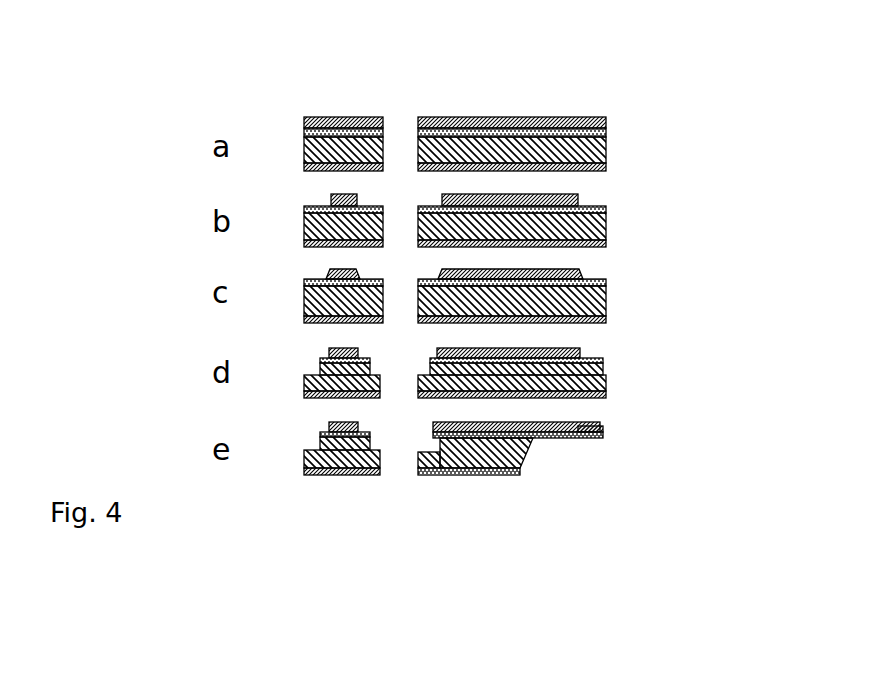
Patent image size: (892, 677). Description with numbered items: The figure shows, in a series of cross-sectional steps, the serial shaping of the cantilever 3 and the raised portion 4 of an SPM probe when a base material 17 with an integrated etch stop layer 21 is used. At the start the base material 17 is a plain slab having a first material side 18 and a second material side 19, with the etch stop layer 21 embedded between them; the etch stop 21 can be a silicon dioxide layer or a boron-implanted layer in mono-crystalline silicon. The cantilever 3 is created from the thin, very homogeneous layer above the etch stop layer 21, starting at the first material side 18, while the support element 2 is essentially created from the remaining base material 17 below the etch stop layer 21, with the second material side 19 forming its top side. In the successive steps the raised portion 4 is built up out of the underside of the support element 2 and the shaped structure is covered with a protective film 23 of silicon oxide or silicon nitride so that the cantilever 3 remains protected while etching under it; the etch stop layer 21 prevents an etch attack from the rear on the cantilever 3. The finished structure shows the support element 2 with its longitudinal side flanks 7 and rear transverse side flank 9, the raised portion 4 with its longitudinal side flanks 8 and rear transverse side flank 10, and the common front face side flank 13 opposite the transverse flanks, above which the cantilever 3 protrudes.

The support element 2 is at (443, 455).
The cantilever 3 is at (576, 425).
The raised portion 4 is at (492, 445).
The longitudinal side flanks 7 is at (305, 388).
The longitudinal side flanks 8 is at (322, 363).
The rear transverse side flank 9 is at (414, 462).
The rear transverse side flank 10 is at (426, 443).
The front face side flank 13 is at (523, 460).
The base material 17 is at (588, 147).
The first material side 18 is at (482, 115).
The second material side 19 is at (586, 173).
The etch stop layer 21 is at (562, 132).
The protective film 23 is at (583, 348).